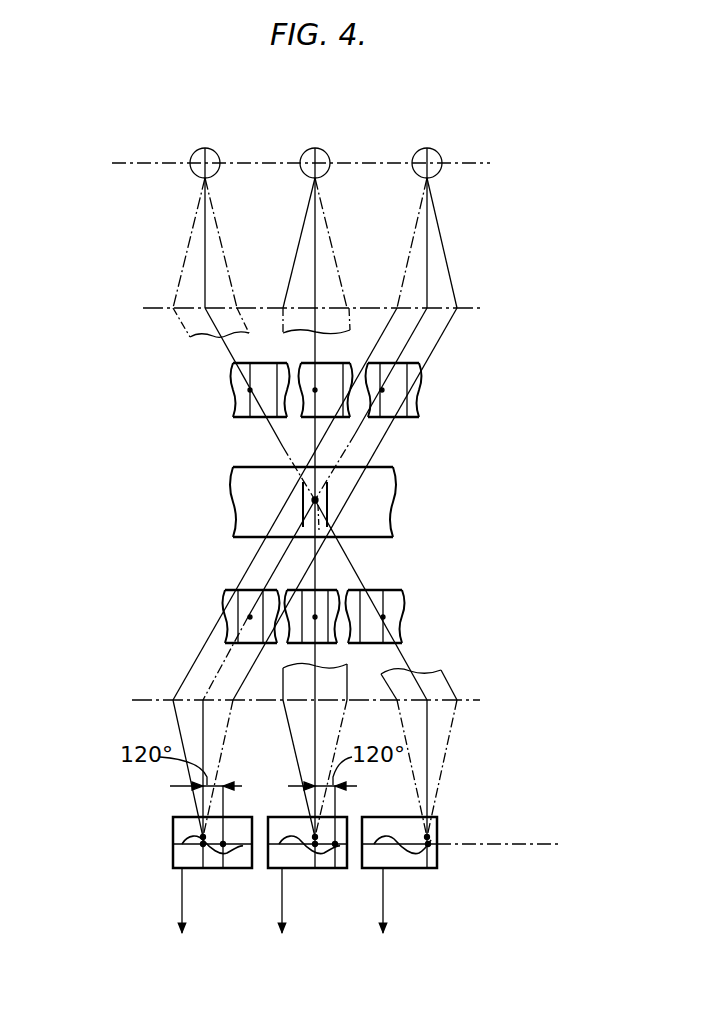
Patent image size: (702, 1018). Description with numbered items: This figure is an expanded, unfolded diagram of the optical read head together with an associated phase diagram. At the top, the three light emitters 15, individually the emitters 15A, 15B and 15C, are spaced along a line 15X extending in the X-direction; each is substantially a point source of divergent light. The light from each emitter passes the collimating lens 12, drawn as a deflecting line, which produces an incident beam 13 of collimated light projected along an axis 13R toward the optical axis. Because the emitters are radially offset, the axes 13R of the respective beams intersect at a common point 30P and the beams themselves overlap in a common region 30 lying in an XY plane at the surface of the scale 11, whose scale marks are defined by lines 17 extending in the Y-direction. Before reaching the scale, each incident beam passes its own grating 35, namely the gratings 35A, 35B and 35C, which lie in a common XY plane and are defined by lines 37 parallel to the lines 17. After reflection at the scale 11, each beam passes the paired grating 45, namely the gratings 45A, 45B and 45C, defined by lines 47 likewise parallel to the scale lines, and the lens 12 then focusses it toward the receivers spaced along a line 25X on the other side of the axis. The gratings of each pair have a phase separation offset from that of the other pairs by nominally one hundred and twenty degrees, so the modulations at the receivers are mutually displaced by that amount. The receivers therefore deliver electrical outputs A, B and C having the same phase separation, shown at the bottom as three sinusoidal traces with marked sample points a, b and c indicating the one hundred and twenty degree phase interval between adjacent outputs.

The light emitters 15 is at (248, 490).
The light emitter 15A is at (196, 153).
The light emitter 15B is at (306, 153).
The light emitter 15C is at (418, 153).
The line 15X is at (476, 162).
The collimating lens 12 is at (158, 307).
The incident beam 13 is at (430, 359).
The axis 13R is at (418, 322).
The grating 35 is at (300, 414).
The grating 35A is at (237, 407).
The grating 35B is at (353, 414).
The grating 35C is at (444, 396).
The lines 37 is at (424, 392).
The common region 30 is at (300, 502).
The common point 30P is at (300, 500).
The lines 17 is at (329, 492).
The scale 11 is at (365, 522).
The grating 45 is at (264, 592).
The grating 45A is at (228, 614).
The grating 45B is at (337, 590).
The grating 45C is at (410, 612).
The lines 47 is at (385, 631).
The line 25X is at (527, 844).
The electrical output A is at (399, 888).
The electrical output B is at (307, 873).
The electrical output C is at (212, 873).
The signal point a is at (335, 847).
The signal point b is at (223, 847).
The signal point c is at (203, 847).